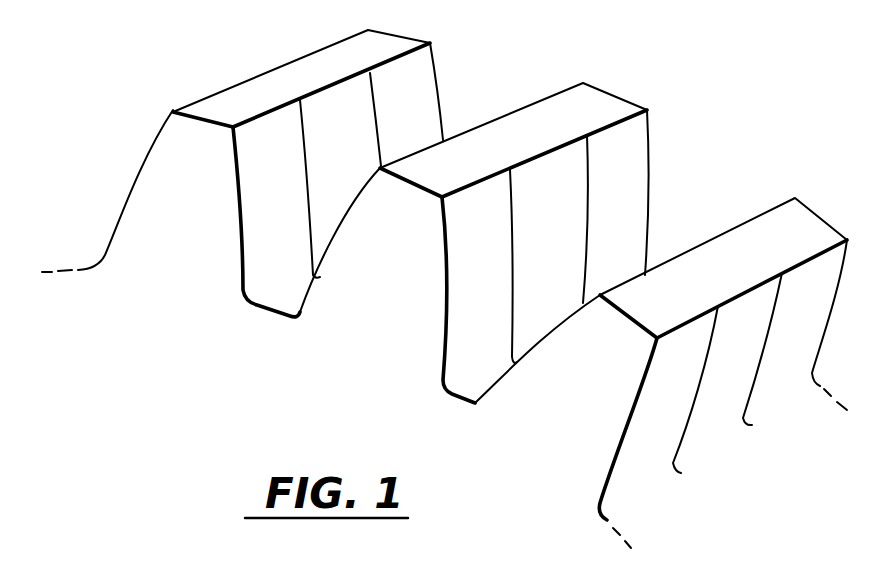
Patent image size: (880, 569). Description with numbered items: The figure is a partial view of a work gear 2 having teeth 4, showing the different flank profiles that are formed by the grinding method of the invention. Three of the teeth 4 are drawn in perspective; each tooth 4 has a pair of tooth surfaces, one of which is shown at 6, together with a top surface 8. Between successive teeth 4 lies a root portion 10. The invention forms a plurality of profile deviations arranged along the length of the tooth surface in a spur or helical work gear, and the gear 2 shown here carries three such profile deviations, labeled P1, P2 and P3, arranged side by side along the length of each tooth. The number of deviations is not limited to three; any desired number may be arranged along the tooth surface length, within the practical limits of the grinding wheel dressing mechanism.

The gear 2 is at (250, 340).
The teeth 4 is at (196, 215).
The tooth surface 6 is at (652, 148).
The top surface 8 is at (548, 110).
The root portion 10 is at (470, 375).
The profile deviation P1 is at (490, 286).
The profile deviation P2 is at (541, 238).
The profile deviation P3 is at (596, 249).